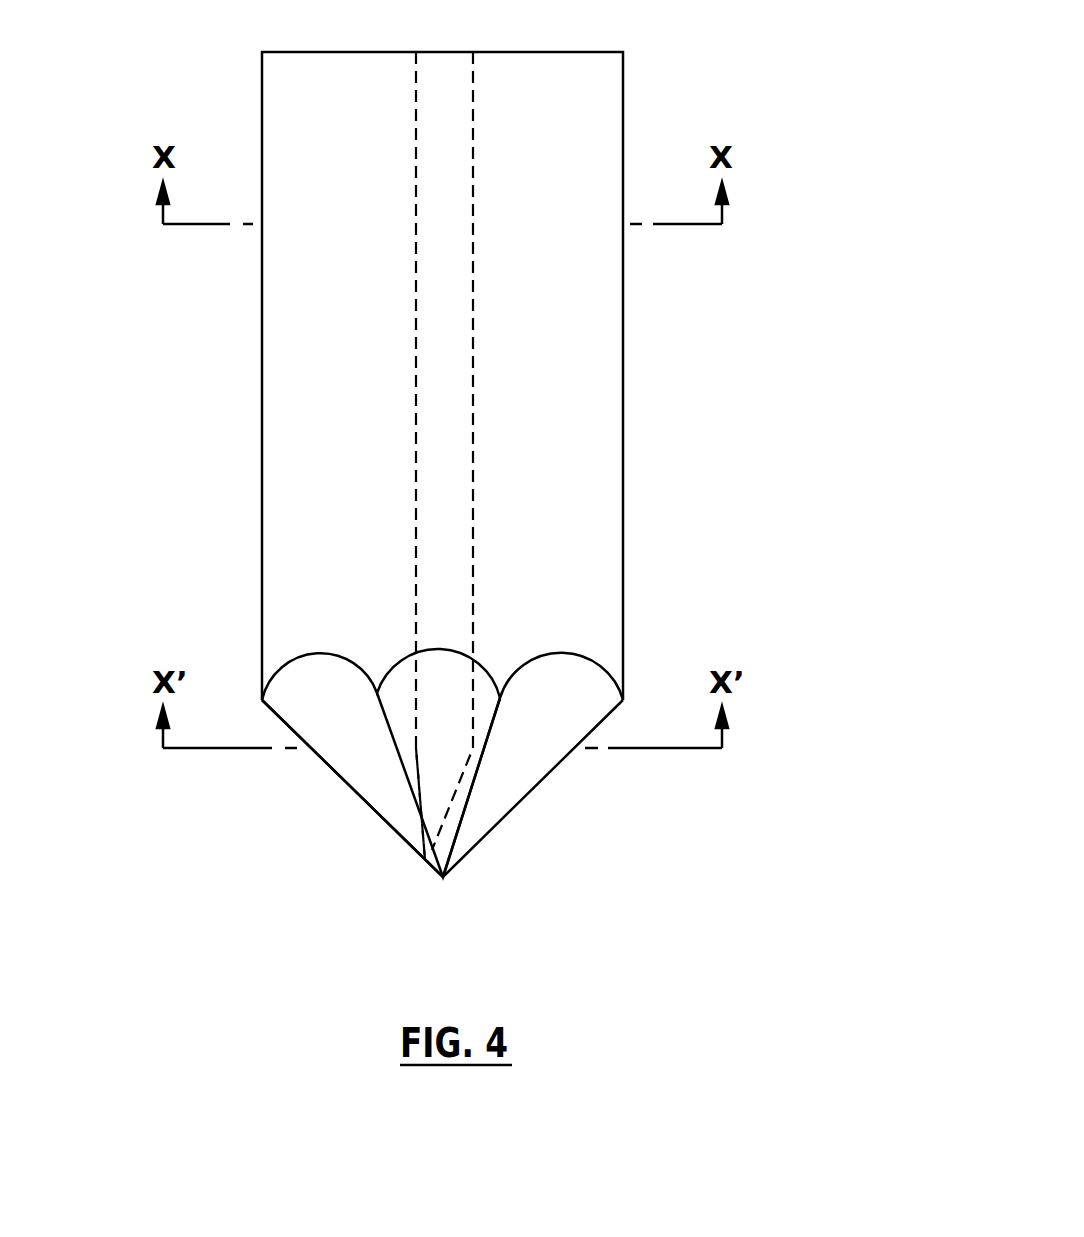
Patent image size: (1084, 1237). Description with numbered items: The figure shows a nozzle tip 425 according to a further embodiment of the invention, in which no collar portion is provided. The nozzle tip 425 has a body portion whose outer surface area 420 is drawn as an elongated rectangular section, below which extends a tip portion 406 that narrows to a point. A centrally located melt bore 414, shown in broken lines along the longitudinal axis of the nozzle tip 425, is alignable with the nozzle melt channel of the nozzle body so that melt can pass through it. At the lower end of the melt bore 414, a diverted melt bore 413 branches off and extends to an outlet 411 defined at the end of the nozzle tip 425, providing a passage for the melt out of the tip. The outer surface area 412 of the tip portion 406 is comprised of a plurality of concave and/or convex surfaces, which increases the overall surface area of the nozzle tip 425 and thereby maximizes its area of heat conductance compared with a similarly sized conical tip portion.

The nozzle tip 425 is at (663, 137).
The outer surface area of body portion 420 is at (623, 337).
The centrally located melt bore 414 is at (437, 578).
The tip portion 406 is at (557, 770).
The outer surface area of tip portion 412 is at (490, 790).
The outlet 411 is at (403, 840).
The diverted melt bore 413 is at (427, 787).